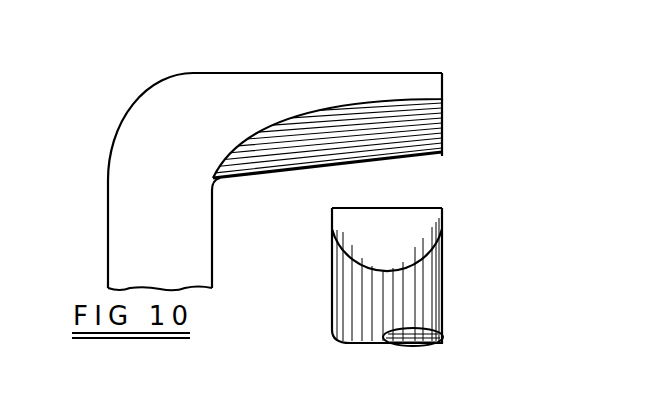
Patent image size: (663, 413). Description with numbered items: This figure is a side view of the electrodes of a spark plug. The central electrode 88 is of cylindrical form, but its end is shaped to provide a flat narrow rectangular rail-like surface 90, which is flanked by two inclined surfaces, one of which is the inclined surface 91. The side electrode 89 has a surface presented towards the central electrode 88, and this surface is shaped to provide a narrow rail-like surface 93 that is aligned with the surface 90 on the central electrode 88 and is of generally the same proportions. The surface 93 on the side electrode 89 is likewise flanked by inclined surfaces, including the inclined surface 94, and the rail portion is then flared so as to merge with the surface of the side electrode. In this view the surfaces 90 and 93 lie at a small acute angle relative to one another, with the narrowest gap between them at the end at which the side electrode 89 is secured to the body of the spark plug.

The central electrode 88 is at (357, 293).
The side electrode 89 is at (155, 110).
The rail-like surface 90 is at (422, 206).
The inclined surface 91 is at (428, 232).
The rail-like surface 93 is at (443, 156).
The inclined surface 94 is at (443, 128).